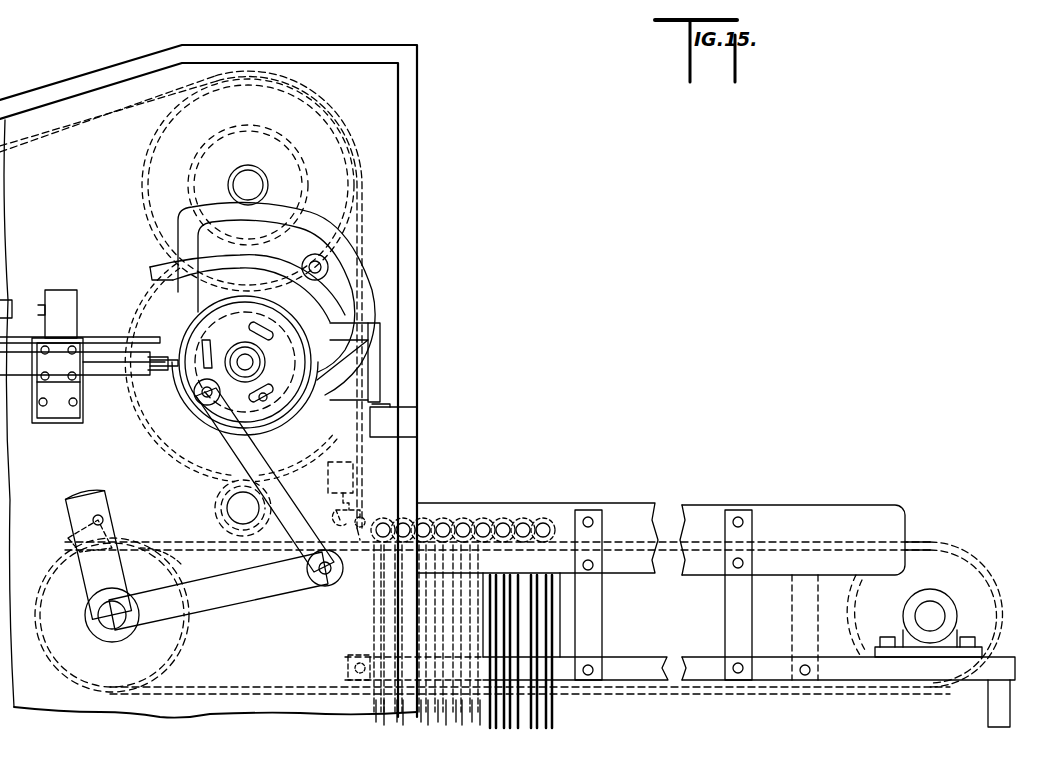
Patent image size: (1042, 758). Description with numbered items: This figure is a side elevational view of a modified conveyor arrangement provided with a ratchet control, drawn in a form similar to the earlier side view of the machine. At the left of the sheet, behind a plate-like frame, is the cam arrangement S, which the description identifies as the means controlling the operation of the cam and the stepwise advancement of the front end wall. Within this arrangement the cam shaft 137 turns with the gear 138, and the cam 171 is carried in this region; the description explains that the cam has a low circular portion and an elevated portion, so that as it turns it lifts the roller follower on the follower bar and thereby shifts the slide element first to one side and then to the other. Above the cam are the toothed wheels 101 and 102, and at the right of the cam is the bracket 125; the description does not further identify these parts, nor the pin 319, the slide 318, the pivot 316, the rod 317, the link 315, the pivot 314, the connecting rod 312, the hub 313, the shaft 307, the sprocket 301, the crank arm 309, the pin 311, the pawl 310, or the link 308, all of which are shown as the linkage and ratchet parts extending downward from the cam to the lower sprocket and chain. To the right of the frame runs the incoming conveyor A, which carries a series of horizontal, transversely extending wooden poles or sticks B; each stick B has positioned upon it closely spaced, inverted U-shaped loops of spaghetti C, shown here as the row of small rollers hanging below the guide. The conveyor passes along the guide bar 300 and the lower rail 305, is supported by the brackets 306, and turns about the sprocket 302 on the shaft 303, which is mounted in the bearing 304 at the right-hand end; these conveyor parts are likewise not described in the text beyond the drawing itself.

The gear 101 is at (297, 152).
The pinion 102 is at (243, 182).
The cam arrangements S is at (147, 266).
The cam 171 is at (343, 242).
The cam shaft 137 is at (245, 355).
The pin 319 is at (263, 397).
The slide 318 is at (203, 348).
The pivot pin 316 is at (205, 396).
The rod 317 is at (188, 373).
The bracket 125 is at (372, 338).
The gear 138 is at (372, 448).
The link 315 is at (244, 452).
The pivot 314 is at (323, 578).
The connecting rod 312 is at (252, 592).
The hub 313 is at (92, 614).
The shaft 307 is at (112, 622).
The sprocket 301 is at (68, 648).
The crank arm 309 is at (107, 568).
The pin 311 is at (106, 516).
The pawl 310 is at (66, 540).
The link 308 is at (165, 552).
The guide bar 300 is at (797, 520).
The loops of spaghetti C is at (524, 518).
The wooden poles or sticks B is at (549, 518).
The bracket 306 is at (604, 620).
The rail 305 is at (853, 682).
The sprocket 302 is at (963, 580).
The incoming conveyor A is at (926, 545).
The shaft 303 is at (928, 615).
The bearing 304 is at (948, 658).